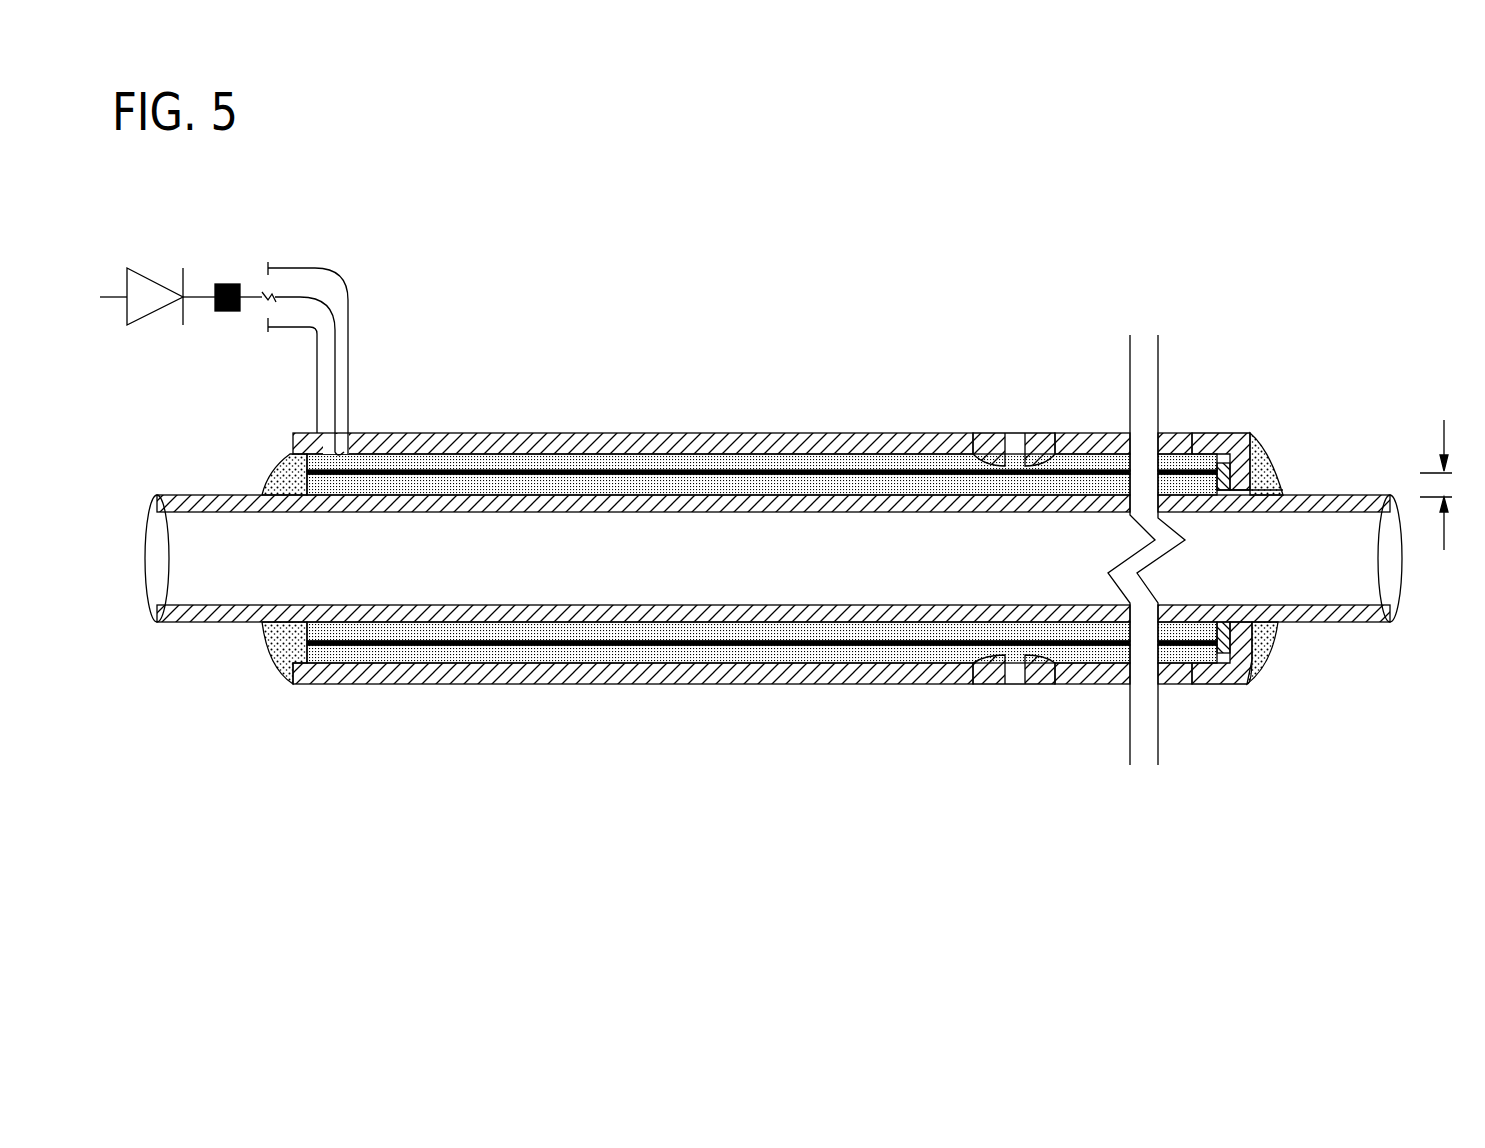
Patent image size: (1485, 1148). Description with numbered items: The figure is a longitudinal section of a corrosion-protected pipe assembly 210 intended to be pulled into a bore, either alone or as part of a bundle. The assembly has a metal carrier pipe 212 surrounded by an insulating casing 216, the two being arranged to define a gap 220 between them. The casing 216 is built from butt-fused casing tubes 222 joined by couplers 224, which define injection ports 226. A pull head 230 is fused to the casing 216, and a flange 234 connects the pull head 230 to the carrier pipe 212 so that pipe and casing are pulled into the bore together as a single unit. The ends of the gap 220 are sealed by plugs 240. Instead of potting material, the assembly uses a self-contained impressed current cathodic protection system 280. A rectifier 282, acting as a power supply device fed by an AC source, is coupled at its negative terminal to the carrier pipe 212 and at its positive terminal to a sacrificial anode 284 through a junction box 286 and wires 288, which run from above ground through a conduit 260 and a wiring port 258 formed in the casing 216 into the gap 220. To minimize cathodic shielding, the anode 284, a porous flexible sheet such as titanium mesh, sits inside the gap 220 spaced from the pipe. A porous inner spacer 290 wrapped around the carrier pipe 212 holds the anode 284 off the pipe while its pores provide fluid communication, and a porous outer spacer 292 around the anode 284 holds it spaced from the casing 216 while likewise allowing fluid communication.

The corrosion-protected pipe assembly 210 is at (382, 806).
The metal carrier pipe 212 is at (580, 495).
The insulating casing 216 is at (694, 433).
The gap 220 is at (496, 477).
The casing tubes 222 is at (833, 432).
The couplers 224 is at (985, 433).
The injection ports 226 is at (1013, 680).
The pull head 230 is at (1212, 432).
The flange 234 is at (1248, 672).
The plugs 240 is at (283, 673).
The wiring port 258 is at (345, 452).
The conduit 260 is at (349, 320).
The self-contained cathodic protection system 280 is at (364, 282).
The rectifier 282 is at (161, 279).
The sacrificial anode 284 is at (585, 648).
The junction box 286 is at (226, 282).
The wires 288 is at (337, 350).
The inner spacer 290 is at (915, 490).
The outer spacer 292 is at (777, 462).